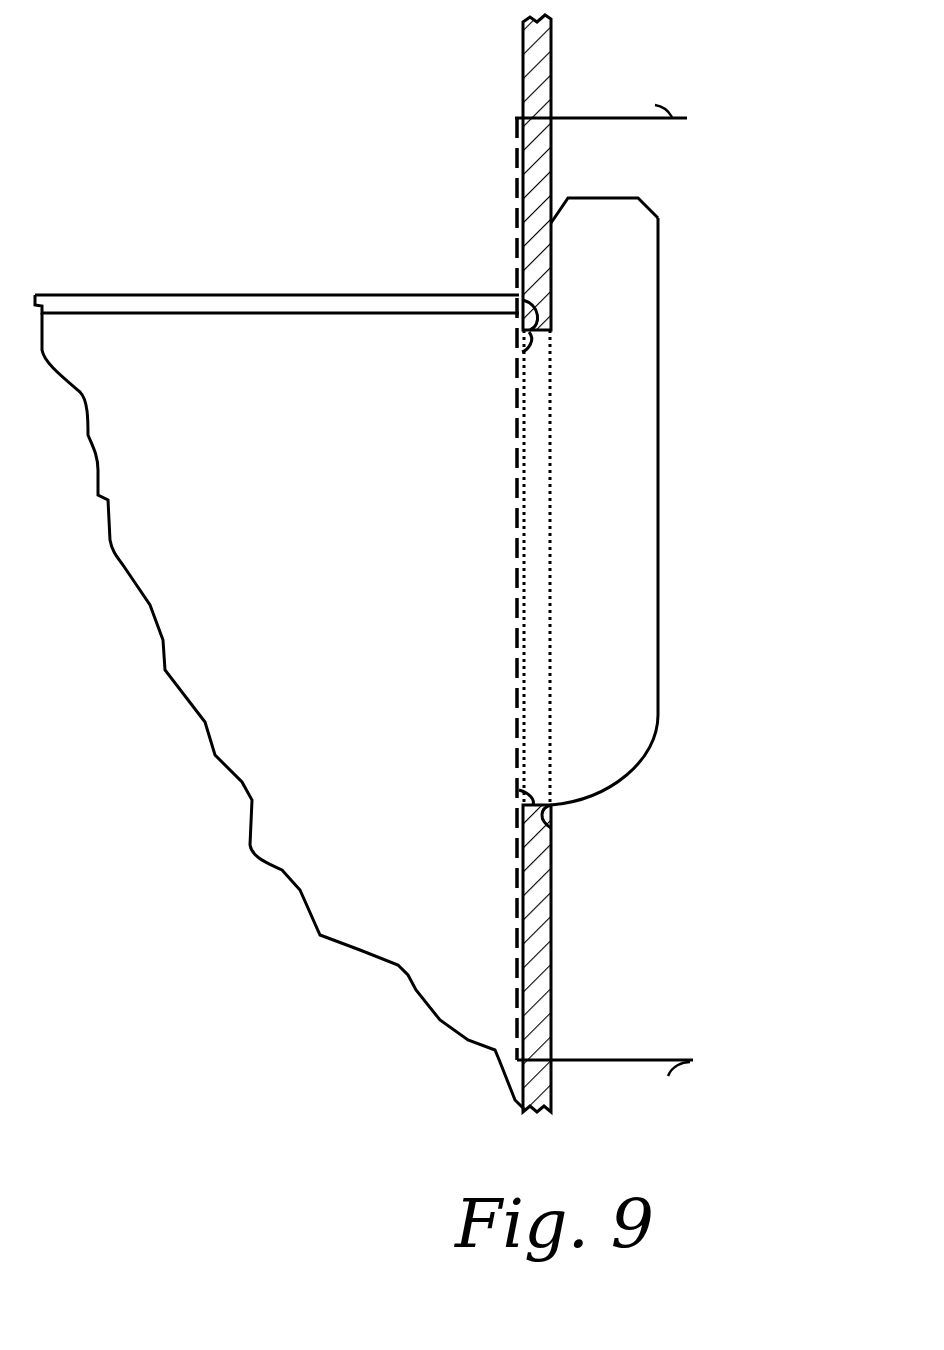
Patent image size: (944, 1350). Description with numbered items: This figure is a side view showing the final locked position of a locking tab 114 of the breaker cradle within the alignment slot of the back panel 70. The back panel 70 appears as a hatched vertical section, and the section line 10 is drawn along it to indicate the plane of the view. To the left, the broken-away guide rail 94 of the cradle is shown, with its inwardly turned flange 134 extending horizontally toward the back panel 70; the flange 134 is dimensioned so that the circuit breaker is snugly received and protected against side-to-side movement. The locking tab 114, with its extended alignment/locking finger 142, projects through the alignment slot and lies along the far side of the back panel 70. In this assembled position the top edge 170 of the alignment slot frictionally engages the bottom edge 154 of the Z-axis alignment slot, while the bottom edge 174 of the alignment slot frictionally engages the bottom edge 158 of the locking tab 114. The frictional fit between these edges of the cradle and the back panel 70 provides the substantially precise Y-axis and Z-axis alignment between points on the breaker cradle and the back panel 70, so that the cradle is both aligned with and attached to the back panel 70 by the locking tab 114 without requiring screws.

The section line 10 is at (626, 590).
The back panel 70 is at (540, 952).
The guide rail 94 is at (265, 703).
The locking tab 114 is at (628, 371).
The inwardly turned flange 134 is at (258, 300).
The alignment/locking finger 142 is at (620, 222).
The bottom edge of Z-axis alignment slot 154 is at (520, 352).
The bottom edge of locking tab 158 is at (528, 800).
The top edge of alignment slot 170 is at (520, 292).
The bottom edge of alignment slot 174 is at (553, 812).